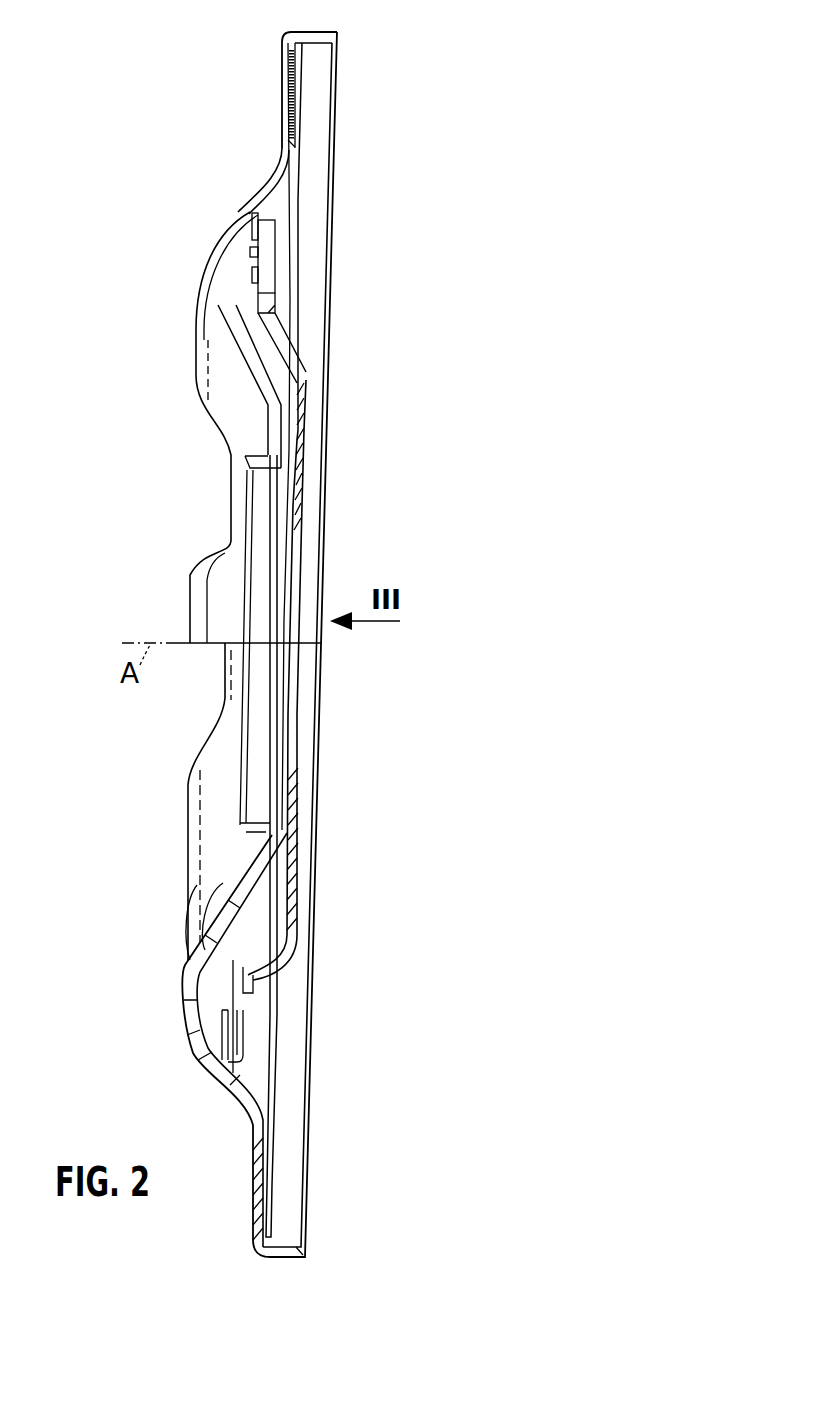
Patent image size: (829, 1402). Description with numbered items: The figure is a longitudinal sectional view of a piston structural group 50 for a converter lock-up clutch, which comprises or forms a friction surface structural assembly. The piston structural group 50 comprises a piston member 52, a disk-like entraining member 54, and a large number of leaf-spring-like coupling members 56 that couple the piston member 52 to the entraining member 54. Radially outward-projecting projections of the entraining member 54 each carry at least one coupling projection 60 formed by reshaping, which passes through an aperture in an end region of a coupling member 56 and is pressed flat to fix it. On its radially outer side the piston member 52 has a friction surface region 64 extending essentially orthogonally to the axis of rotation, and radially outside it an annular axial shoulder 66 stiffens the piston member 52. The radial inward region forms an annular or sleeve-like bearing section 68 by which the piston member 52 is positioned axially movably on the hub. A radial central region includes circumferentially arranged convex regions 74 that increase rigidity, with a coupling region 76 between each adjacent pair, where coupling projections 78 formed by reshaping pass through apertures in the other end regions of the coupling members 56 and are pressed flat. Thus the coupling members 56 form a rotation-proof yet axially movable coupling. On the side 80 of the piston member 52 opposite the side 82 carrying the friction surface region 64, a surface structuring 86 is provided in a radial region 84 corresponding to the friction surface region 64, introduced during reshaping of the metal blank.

The piston structural group 50 is at (362, 160).
The piston member 52 is at (213, 238).
The entraining member 54 is at (314, 393).
The coupling members 56 is at (250, 277).
The coupling projection 60 is at (257, 997).
The friction surface region 64 is at (276, 80).
The annular axial shoulder 66 is at (340, 33).
The bearing section 68 is at (262, 445).
The convex regions 74 is at (200, 822).
The coupling region 76 is at (243, 230).
The coupling projections 78 is at (257, 251).
The side 80 is at (317, 115).
The side 82 is at (218, 112).
The radial region 84 is at (325, 175).
The surface structuring 86 is at (296, 74).